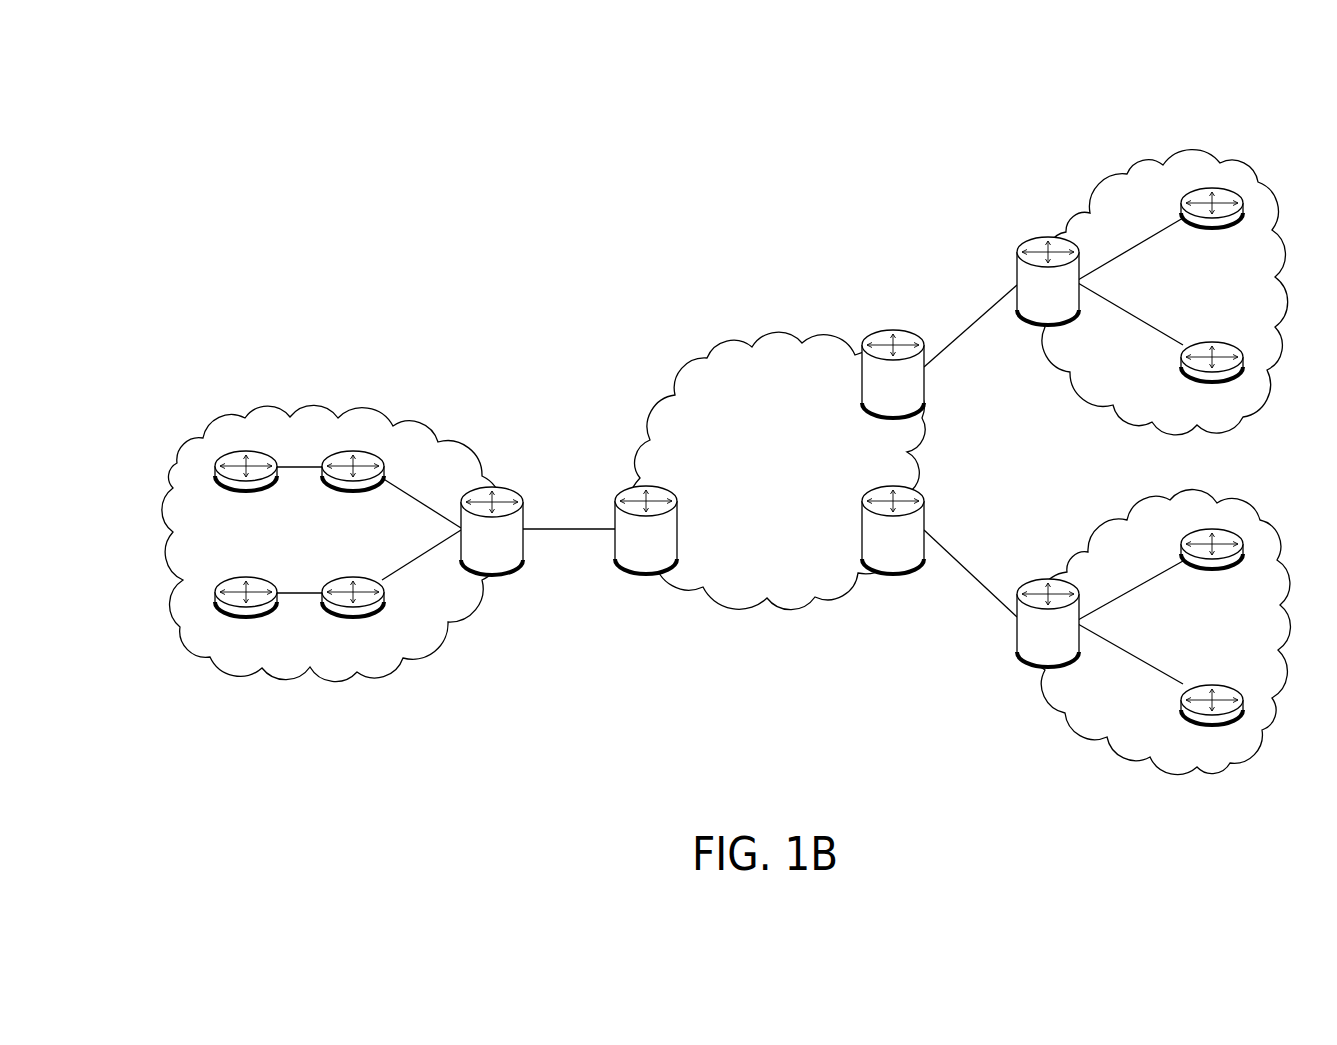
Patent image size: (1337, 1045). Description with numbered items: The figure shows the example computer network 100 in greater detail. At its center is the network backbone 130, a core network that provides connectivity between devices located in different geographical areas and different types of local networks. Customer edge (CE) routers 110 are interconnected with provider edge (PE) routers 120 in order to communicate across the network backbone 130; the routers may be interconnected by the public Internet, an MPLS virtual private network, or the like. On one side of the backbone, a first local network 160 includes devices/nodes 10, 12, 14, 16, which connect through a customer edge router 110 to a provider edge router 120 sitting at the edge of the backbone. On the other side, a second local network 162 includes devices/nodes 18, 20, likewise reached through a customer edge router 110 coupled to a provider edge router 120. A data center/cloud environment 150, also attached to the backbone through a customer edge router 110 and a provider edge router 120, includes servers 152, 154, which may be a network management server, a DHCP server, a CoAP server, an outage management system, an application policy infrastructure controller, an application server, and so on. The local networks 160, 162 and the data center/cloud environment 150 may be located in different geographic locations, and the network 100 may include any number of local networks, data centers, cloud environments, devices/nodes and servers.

The computer network 100 is at (740, 416).
The customer edge (CE) router 110 is at (508, 562).
The provider edge (PE) router 120 is at (662, 562).
The network backbone 130 is at (791, 491).
The data center/cloud environment 150 is at (1135, 164).
The server 152 is at (1212, 224).
The server 154 is at (1212, 377).
The local network 160 is at (362, 396).
The local network 162 is at (1062, 710).
The device/node 10 is at (246, 486).
The device/node 12 is at (353, 486).
The device/node 14 is at (246, 612).
The device/node 16 is at (353, 612).
The device/node 18 is at (1212, 720).
The device/node 20 is at (1212, 564).